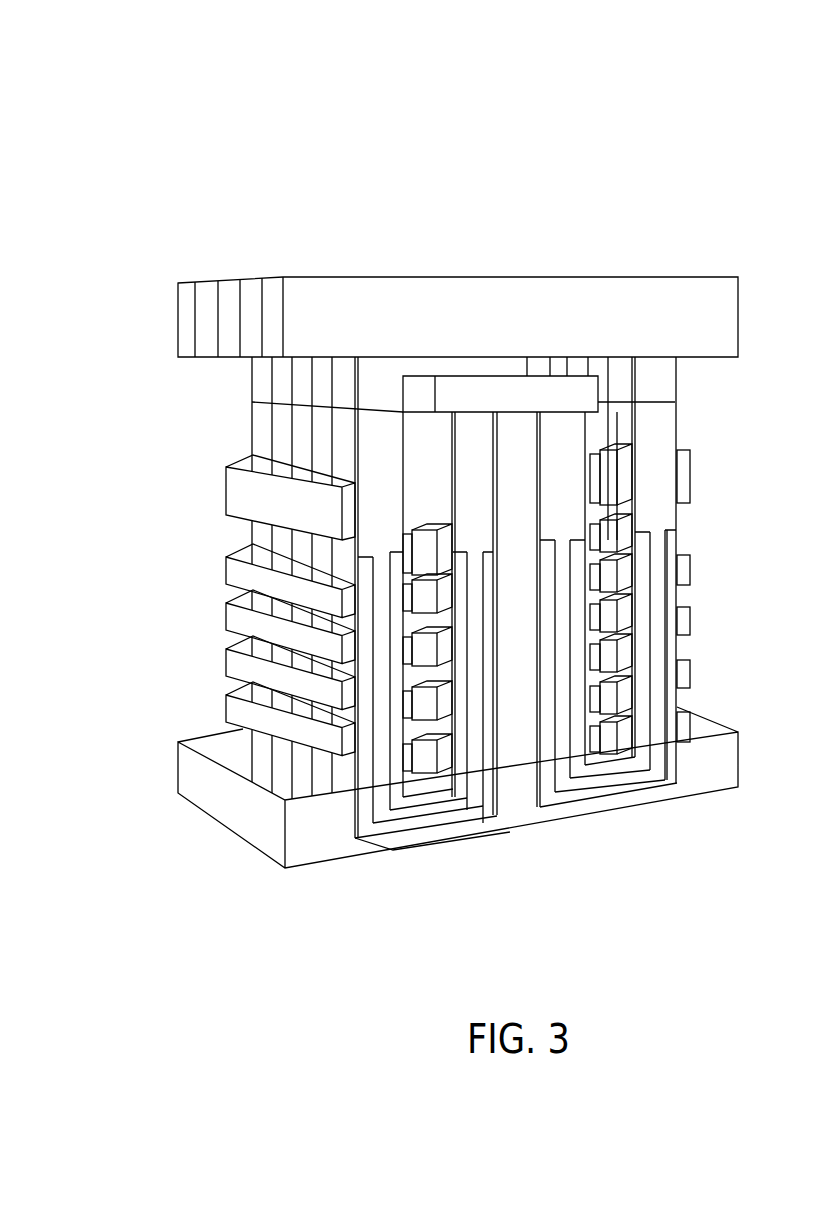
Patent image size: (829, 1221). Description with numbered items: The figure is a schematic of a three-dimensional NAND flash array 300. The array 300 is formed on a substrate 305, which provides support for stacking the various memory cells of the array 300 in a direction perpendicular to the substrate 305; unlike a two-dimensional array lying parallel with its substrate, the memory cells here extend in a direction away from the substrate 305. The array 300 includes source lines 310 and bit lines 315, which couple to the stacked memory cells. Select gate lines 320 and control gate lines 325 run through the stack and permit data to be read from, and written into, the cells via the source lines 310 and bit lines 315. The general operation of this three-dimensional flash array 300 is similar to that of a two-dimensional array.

The 3D NAND flash array 300 is at (643, 88).
The substrate 305 is at (268, 830).
The source lines 310 is at (476, 374).
The bit lines 315 is at (295, 274).
The select gate lines 320 is at (217, 487).
The control gate lines 325 is at (216, 727).